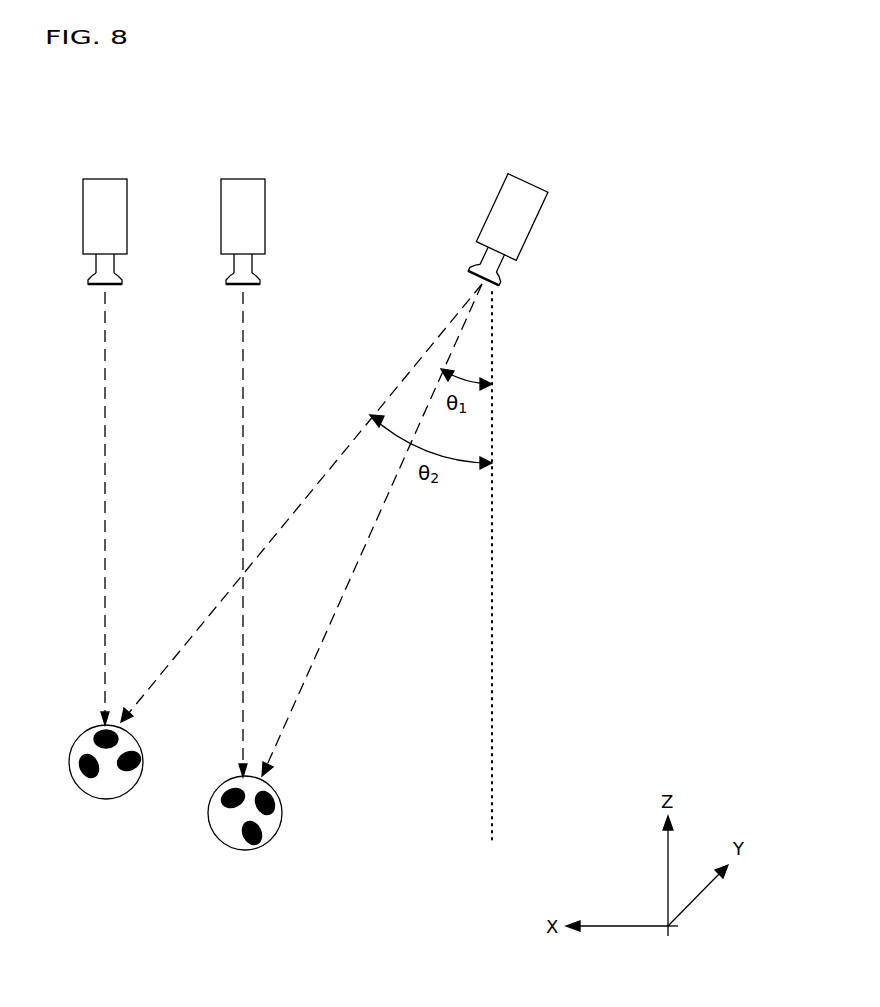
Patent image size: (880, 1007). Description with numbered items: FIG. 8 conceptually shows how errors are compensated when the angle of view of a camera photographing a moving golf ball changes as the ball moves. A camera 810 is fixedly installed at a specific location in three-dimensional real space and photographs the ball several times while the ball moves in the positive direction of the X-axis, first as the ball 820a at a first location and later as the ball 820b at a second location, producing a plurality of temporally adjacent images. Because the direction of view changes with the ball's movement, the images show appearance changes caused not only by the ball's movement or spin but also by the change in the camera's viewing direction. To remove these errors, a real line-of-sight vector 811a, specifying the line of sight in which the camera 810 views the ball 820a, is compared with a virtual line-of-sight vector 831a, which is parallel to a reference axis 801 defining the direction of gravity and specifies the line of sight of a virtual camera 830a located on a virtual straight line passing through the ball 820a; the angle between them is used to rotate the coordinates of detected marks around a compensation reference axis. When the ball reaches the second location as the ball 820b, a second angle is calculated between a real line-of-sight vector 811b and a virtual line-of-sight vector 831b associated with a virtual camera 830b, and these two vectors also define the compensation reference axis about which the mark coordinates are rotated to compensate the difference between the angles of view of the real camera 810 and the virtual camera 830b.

The camera 810 is at (528, 183).
The virtual camera 830a is at (243, 179).
The virtual camera 830b is at (105, 179).
The virtual line-of-sight vector 831a is at (244, 341).
The virtual line-of-sight vector 831b is at (106, 389).
The real line-of-sight vector 811a is at (337, 602).
The real line-of-sight vector 811b is at (330, 462).
The reference axis 801 is at (493, 613).
The ball 820a is at (245, 851).
The ball 820b is at (106, 800).